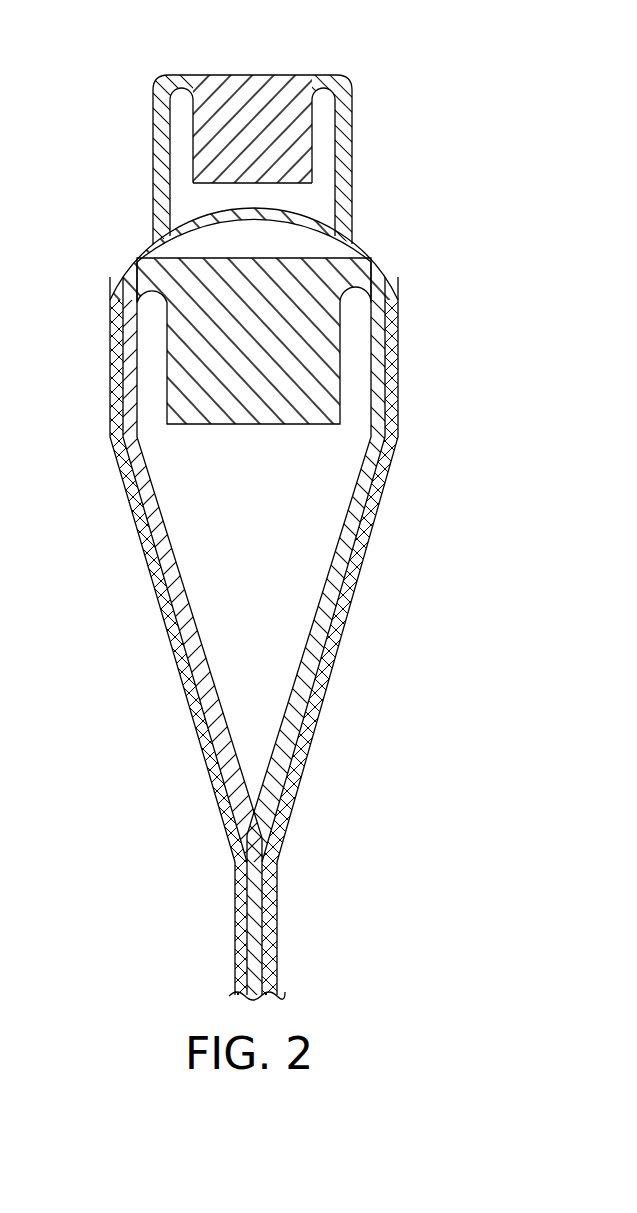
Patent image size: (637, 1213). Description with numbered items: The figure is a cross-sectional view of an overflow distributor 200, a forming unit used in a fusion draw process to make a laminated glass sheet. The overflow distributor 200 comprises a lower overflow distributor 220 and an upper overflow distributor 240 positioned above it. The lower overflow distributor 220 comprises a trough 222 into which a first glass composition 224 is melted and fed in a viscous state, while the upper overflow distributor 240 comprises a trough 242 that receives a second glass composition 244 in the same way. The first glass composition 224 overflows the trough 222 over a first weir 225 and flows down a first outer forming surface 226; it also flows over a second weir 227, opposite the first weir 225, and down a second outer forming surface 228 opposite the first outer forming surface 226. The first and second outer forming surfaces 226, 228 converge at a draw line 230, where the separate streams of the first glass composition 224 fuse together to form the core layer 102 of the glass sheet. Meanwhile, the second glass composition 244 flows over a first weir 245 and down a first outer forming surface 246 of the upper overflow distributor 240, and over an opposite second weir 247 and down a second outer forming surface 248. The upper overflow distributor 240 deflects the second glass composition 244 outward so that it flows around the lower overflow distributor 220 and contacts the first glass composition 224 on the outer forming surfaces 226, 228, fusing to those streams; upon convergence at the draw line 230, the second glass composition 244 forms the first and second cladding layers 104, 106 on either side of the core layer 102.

The overflow distributor 200 is at (432, 126).
The upper overflow distributor 240 is at (353, 104).
The second glass composition 244 is at (258, 78).
The first weir 245 is at (176, 88).
The second weir 247 is at (346, 76).
The trough 242 is at (183, 147).
The first outer forming surface 246 is at (175, 195).
The second outer forming surface 248 is at (352, 192).
The lower overflow distributor 220 is at (362, 335).
The first weir 225 is at (130, 252).
The second weir 227 is at (383, 258).
The trough 222 is at (155, 361).
The first outer forming surface 226 is at (153, 501).
The second outer forming surface 228 is at (340, 539).
The first glass composition 224 is at (247, 262).
The draw line 230 is at (287, 846).
The core layer 102 is at (236, 889).
The first cladding layer 104 is at (236, 952).
The second cladding layer 106 is at (277, 946).